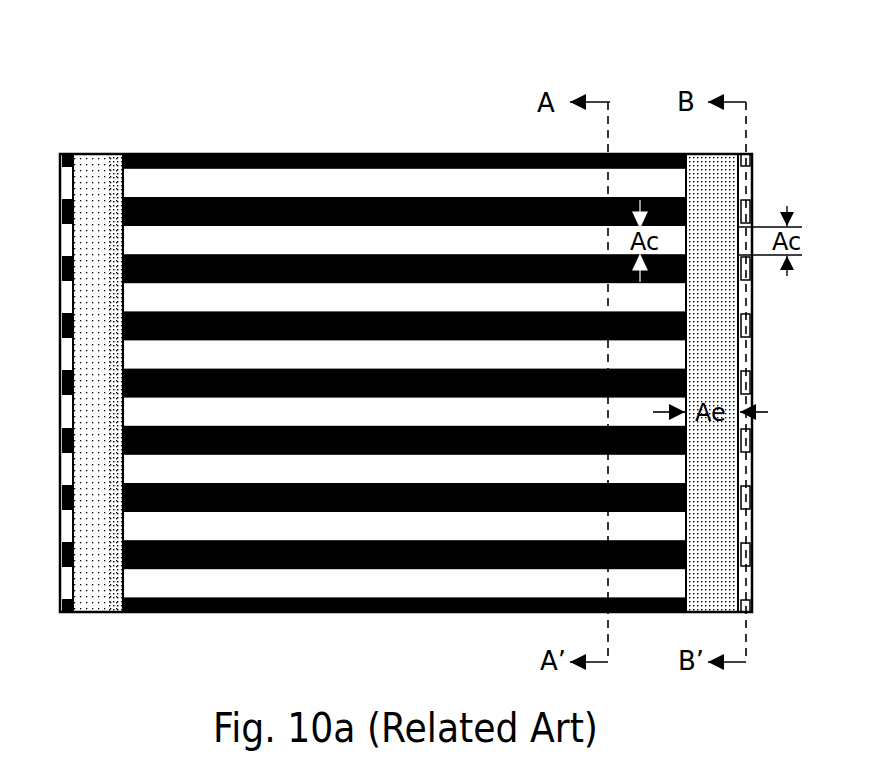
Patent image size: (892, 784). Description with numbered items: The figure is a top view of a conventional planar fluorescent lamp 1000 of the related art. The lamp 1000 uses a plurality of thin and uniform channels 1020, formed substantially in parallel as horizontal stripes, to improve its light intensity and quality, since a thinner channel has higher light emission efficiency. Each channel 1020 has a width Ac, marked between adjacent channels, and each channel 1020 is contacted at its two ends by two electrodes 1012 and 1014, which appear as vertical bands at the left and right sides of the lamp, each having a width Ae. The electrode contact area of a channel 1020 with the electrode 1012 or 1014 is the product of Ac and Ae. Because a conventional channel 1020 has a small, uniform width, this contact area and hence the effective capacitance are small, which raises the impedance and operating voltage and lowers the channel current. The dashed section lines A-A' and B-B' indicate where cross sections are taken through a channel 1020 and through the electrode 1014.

The conventional planar fluorescent lamp 1000 is at (449, 315).
The electrode 1012 is at (97, 175).
The electrode 1014 is at (723, 179).
The thin and uniform channels 1020 is at (200, 185).